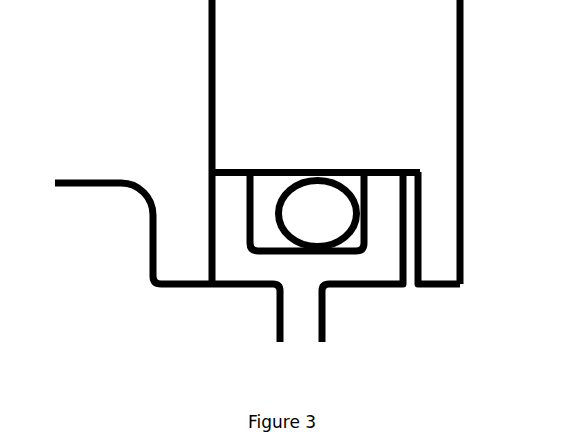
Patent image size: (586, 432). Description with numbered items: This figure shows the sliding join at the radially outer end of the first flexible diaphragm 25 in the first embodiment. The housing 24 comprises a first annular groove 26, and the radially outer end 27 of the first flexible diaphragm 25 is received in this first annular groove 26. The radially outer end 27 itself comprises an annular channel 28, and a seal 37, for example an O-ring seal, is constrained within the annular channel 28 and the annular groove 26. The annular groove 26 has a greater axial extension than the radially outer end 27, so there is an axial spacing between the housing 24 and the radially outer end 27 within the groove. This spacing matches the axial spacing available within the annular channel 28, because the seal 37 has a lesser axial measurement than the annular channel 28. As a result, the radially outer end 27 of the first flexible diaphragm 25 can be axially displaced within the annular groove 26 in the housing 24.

The housing 24 is at (331, 82).
The first flexible diaphragm 25 is at (298, 318).
The first annular groove 26 is at (408, 207).
The radially outer end 27 is at (222, 222).
The annular channel 28 is at (262, 183).
The seal 37 is at (329, 216).